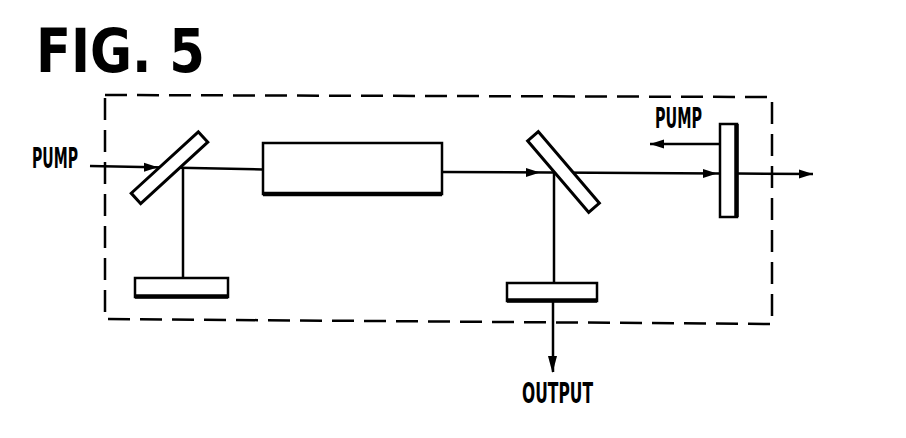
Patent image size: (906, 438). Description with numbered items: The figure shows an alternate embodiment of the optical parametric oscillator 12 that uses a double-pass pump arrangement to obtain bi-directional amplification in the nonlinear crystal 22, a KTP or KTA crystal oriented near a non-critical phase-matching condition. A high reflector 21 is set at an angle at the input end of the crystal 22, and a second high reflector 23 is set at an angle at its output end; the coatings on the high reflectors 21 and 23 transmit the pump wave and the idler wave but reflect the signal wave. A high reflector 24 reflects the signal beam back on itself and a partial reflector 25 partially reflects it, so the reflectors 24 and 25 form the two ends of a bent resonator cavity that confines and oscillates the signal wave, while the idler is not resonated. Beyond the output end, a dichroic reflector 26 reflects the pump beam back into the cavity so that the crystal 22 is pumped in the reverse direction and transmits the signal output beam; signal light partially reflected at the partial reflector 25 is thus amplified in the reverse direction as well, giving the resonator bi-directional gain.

The optical parametric oscillator 12 is at (635, 97).
The high reflector 21 is at (184, 142).
The nonlinear crystal 22 is at (348, 197).
The high reflector 23 is at (557, 152).
The high reflector 24 is at (228, 288).
The partial reflector 25 is at (597, 291).
The dichroic reflector 26 is at (726, 217).